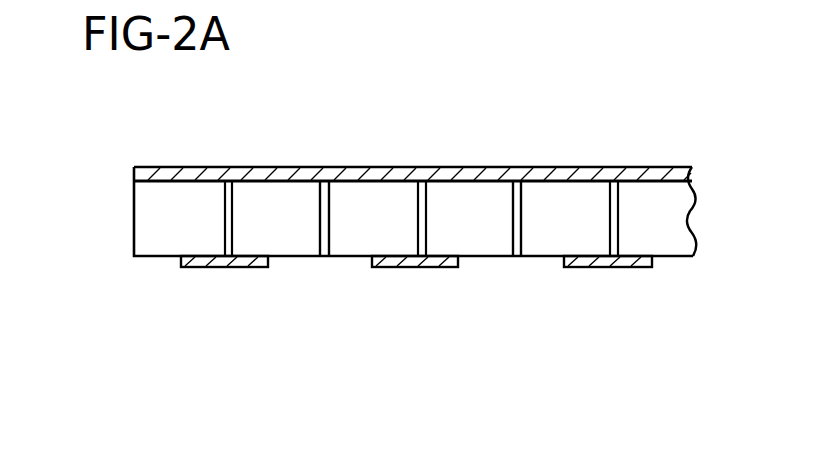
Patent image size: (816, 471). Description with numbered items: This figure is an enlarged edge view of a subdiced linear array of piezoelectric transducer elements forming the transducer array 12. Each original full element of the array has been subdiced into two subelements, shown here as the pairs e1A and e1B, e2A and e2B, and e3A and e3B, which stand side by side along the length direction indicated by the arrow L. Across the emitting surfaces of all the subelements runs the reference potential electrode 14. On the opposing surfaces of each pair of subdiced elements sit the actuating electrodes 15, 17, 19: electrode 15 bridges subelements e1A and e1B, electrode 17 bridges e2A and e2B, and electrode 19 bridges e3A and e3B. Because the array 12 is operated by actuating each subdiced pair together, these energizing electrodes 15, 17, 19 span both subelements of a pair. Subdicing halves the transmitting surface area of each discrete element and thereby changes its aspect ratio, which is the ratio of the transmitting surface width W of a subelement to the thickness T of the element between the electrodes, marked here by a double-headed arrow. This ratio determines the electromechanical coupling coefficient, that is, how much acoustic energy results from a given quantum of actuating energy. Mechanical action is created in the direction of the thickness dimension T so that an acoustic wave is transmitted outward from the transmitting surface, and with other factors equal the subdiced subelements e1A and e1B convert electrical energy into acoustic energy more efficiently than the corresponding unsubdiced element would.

The transducer array 12 is at (128, 198).
The reference potential electrode 14 is at (360, 166).
The actuating electrode 15 is at (218, 267).
The actuating electrode 17 is at (413, 267).
The actuating electrode 19 is at (603, 267).
The transmitting surface width W is at (220, 158).
The thickness dimension T is at (178, 190).
The length direction L is at (228, 420).
The subdiced subelement e1A is at (158, 255).
The subdiced subelement e1B is at (297, 255).
The subdiced subelement e2A is at (358, 255).
The subdiced subelement e2B is at (483, 255).
The subdiced subelement e3A is at (542, 255).
The subdiced subelement e3B is at (677, 255).